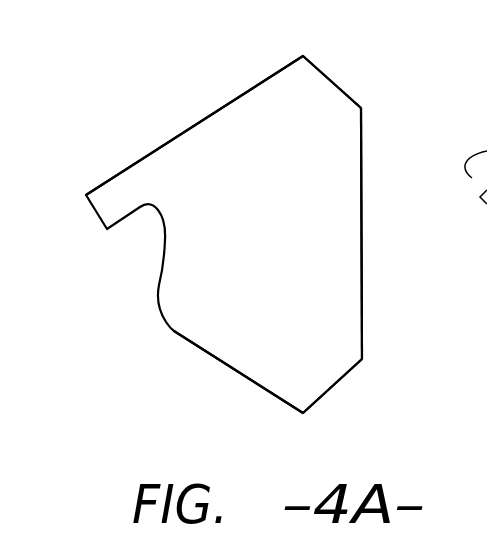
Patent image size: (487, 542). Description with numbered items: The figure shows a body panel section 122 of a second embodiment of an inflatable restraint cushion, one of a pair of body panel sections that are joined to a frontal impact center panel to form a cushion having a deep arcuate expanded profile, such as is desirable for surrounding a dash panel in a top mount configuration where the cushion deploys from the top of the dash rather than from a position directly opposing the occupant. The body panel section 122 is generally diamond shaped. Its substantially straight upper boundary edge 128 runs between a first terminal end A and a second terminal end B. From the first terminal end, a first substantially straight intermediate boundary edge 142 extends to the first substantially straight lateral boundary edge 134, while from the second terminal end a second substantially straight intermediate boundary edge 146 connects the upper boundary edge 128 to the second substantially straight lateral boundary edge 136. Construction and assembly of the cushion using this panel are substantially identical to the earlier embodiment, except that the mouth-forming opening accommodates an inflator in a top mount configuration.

The body panel section 122 is at (241, 251).
The first substantially straight lateral boundary edge 134 is at (290, 34).
The first substantially straight intermediate boundary edge 142 is at (327, 32).
The upper boundary edge 128 is at (393, 110).
The second substantially straight intermediate boundary edge 146 is at (330, 442).
The second substantially straight lateral boundary edge 136 is at (162, 345).